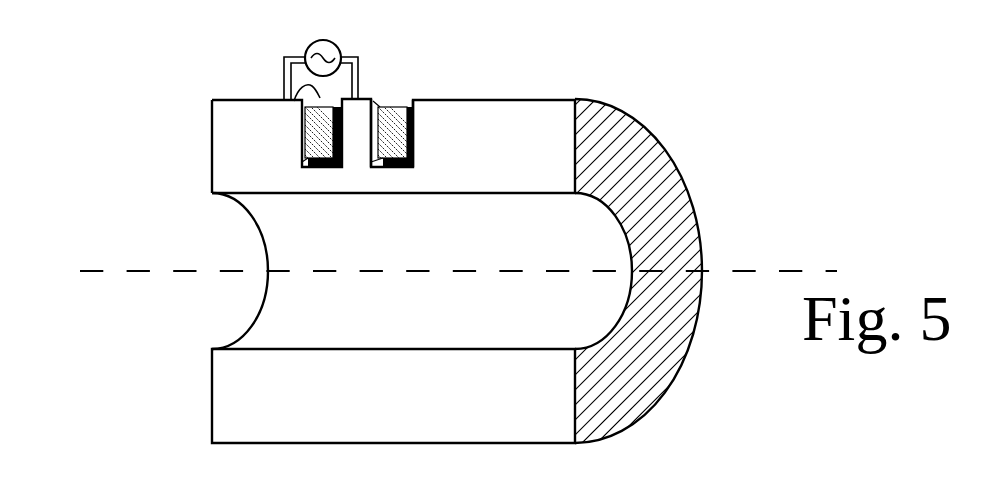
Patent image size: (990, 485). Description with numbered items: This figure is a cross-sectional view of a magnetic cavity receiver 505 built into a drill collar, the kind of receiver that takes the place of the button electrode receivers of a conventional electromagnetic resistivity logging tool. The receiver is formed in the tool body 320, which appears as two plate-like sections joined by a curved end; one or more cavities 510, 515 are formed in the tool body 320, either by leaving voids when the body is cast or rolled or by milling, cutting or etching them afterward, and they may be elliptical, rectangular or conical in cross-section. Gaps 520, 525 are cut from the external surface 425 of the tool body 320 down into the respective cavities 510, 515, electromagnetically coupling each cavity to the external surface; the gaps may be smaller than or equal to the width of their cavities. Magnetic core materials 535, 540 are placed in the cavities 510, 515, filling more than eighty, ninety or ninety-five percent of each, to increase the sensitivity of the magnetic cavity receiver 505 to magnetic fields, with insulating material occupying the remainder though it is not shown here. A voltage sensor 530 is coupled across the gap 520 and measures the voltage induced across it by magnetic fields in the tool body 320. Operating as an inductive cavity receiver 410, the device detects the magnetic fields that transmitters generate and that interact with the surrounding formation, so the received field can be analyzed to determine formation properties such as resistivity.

The magnetic cavity receiver 505 is at (592, 57).
The inductive cavity receiver 410 is at (700, 243).
The tool body 320 is at (222, 135).
The external surface 425 is at (229, 100).
The gap 520 is at (298, 101).
The voltage sensor 530 is at (312, 43).
The gap 525 is at (393, 98).
The magnetic core material 535 is at (309, 131).
The magnetic core material 540 is at (393, 137).
The cavity 510 is at (302, 167).
The cavity 515 is at (373, 167).